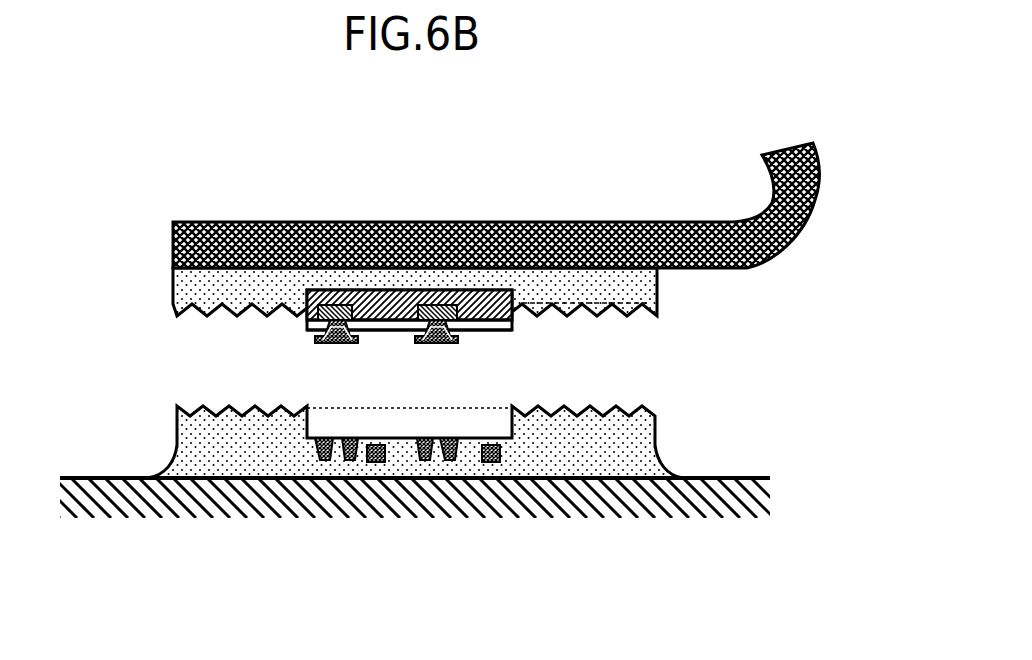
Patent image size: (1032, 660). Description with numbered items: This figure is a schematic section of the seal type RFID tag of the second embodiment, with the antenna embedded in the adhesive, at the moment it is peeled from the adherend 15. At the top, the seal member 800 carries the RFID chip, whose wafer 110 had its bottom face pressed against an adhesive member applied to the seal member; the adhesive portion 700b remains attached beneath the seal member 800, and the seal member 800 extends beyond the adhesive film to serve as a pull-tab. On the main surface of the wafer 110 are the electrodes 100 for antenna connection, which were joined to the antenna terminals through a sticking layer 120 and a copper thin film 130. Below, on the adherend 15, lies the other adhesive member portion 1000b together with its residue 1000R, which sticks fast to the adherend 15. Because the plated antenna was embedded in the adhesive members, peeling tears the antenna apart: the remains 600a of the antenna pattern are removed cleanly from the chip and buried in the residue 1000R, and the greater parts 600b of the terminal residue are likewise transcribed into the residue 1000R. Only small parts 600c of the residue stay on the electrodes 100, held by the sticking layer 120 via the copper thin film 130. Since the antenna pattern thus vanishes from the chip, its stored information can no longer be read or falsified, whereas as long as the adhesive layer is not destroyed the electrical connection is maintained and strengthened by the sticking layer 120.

The seal member 800 is at (174, 232).
The electrodes for antenna connection 100 is at (436, 290).
The adhesive layer 700b is at (612, 316).
The wafer 110 is at (512, 349).
The sticking layer 120 is at (310, 322).
The copper thin film 130 is at (320, 342).
The parts of the residue 600c is at (430, 343).
The greater parts of the residue 600b is at (452, 438).
The remains of the antenna pattern 600a is at (492, 440).
The wiring substrate 1000b is at (630, 413).
The residue of the adhesive member 1000R is at (634, 454).
The adherend 15 is at (496, 520).